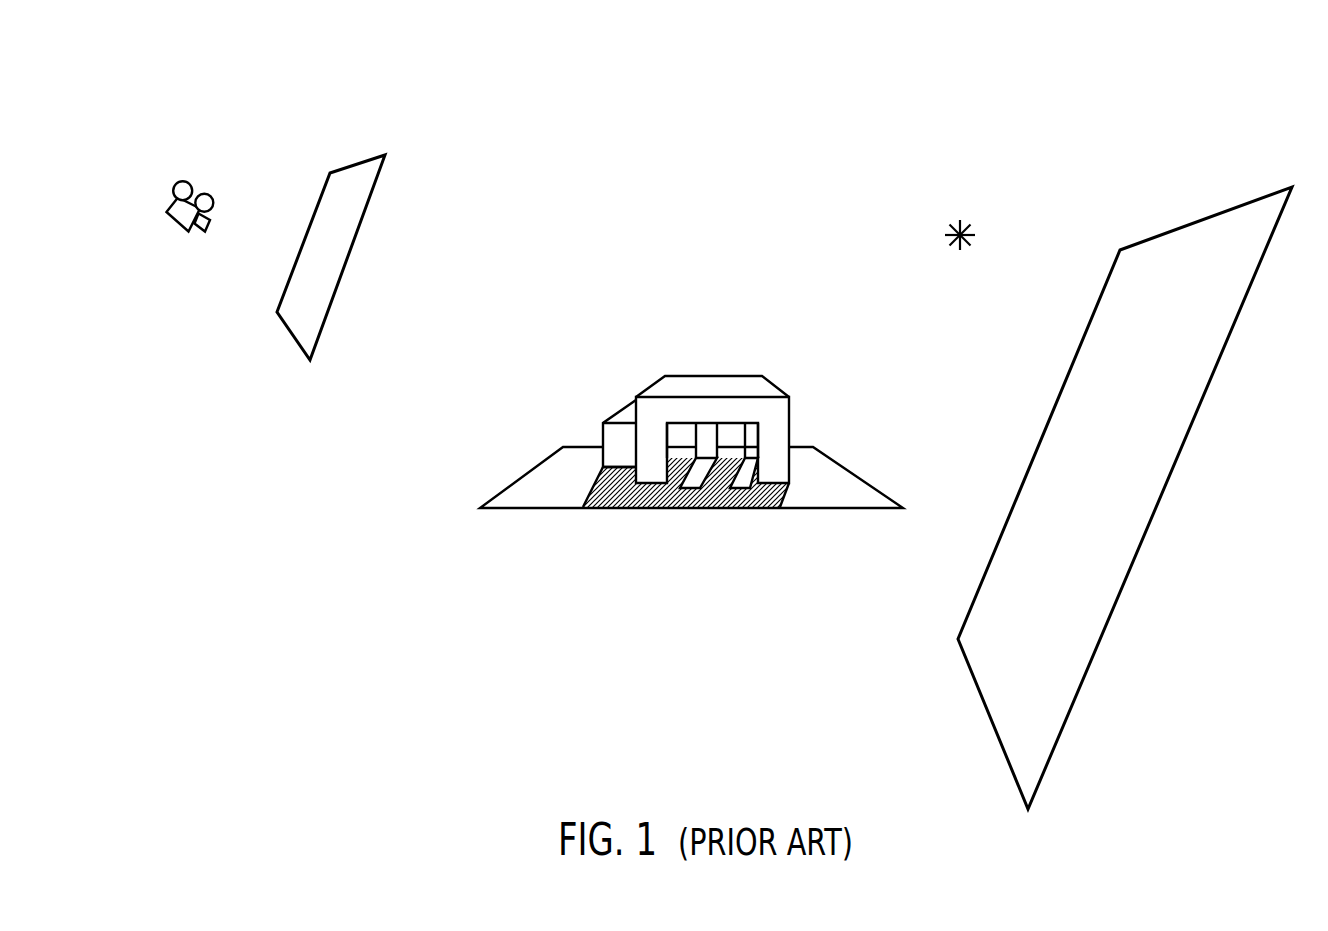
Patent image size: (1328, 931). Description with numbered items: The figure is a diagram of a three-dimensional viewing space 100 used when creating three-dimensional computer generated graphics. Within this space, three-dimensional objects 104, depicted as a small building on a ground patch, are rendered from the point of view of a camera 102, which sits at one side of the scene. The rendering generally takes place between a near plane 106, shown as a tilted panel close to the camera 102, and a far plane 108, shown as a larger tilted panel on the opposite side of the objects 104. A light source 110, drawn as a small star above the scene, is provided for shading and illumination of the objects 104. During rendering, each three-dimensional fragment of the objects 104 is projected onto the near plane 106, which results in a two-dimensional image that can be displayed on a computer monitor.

The three-dimensional viewing space 100 is at (1172, 42).
The camera 102 is at (197, 176).
The 3D objects 104 is at (562, 510).
The near plane 106 is at (360, 163).
The far plane 108 is at (1198, 220).
The light source 110 is at (960, 220).